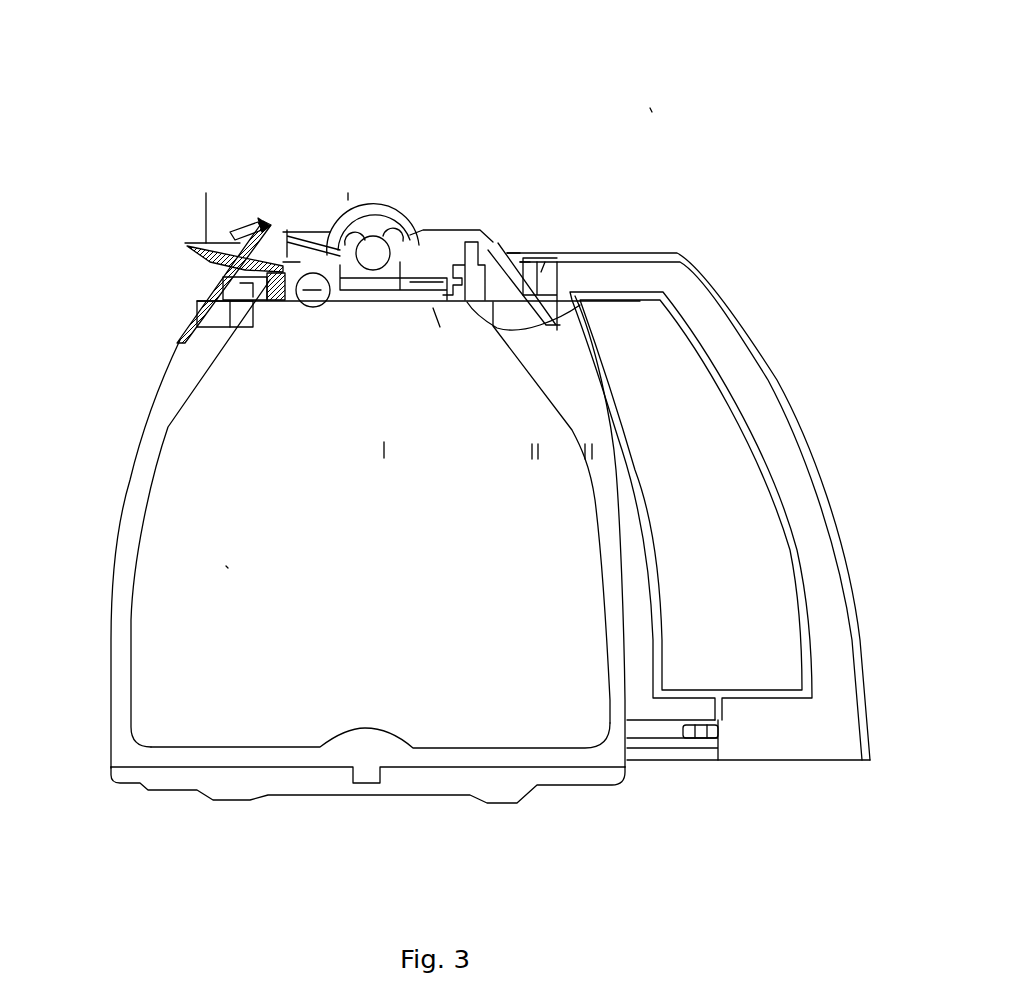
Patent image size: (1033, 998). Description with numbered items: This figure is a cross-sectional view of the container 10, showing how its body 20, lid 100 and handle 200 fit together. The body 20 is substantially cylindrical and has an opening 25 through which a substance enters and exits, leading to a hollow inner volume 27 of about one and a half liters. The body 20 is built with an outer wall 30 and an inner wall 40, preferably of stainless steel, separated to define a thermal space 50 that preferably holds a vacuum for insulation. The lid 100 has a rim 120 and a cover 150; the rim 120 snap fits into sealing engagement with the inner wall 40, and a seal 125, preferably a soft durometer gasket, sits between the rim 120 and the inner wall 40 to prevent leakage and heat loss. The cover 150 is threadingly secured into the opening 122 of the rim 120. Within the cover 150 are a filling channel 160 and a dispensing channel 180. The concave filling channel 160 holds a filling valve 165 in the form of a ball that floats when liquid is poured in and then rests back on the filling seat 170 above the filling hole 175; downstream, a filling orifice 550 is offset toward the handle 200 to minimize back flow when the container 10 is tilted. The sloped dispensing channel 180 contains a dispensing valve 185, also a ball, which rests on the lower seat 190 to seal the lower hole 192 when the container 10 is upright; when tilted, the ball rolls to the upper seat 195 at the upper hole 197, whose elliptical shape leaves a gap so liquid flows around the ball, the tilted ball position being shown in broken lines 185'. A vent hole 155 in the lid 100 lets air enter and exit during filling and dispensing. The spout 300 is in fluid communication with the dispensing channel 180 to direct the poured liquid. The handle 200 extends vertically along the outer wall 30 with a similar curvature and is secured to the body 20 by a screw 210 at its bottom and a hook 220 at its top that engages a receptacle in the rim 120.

The container 10 is at (650, 108).
The body 20 is at (120, 423).
The opening 25 is at (370, 312).
The inner volume 27 is at (228, 568).
The outer wall 30 is at (117, 578).
The inner wall 40 is at (132, 618).
The thermal space 50 is at (112, 668).
The lid 100 is at (348, 193).
The rim 120 is at (507, 253).
The opening 122 is at (572, 300).
The seal 125 is at (541, 272).
The cover 150 is at (413, 243).
The vent hole 155 is at (450, 302).
The filling channel 160 is at (397, 237).
The filling valve 165 is at (375, 222).
The filling seat 170 is at (377, 225).
The filling hole 175 is at (390, 303).
The dispensing channel 180 is at (250, 225).
The dispensing valve 185 is at (311, 228).
The dispensing ball position 185' is at (285, 197).
The lower seat 190 is at (197, 327).
The lower hole 192 is at (308, 317).
The upper seat 195 is at (222, 228).
The upper hole 197 is at (238, 225).
The handle 200 is at (820, 413).
The screw 210 is at (730, 732).
The hook 220 is at (558, 260).
The spout 300 is at (206, 243).
The filling orifice 550 is at (433, 308).